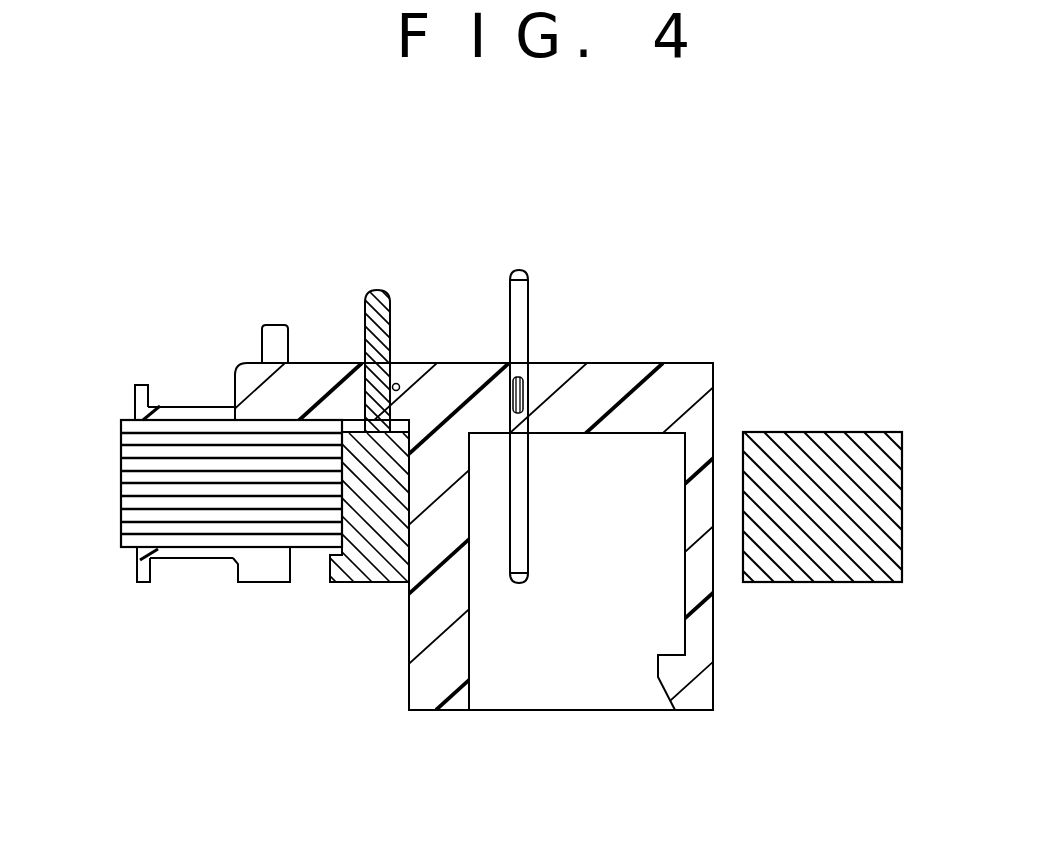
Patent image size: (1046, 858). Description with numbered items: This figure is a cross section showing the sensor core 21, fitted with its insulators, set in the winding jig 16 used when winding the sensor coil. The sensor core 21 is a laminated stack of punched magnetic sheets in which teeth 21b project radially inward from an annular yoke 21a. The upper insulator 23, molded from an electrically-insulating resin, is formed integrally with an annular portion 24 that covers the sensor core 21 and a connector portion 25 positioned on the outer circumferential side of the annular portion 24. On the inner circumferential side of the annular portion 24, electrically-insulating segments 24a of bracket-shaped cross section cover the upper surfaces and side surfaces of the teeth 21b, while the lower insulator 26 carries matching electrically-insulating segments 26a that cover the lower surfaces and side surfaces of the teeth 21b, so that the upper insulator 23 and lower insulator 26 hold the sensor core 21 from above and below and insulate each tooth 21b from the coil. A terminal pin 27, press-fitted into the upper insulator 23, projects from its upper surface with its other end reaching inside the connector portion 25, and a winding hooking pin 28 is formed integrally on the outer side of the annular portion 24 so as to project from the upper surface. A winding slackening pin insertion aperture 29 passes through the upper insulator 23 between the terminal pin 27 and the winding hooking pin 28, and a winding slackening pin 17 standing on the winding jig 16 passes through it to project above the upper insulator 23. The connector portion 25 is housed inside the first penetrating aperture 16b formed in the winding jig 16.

The winding jig 16 is at (853, 431).
The first penetrating aperture 16b is at (735, 458).
The winding slackening pin 17 is at (377, 292).
The sensor core 21 is at (118, 525).
The annular yoke 21a is at (303, 493).
The tooth 21b is at (150, 477).
The upper insulator 23 is at (713, 362).
The annular portion 24 is at (295, 395).
The electrically-insulating segment 24a is at (173, 410).
The connector portion 25 is at (673, 363).
The lower insulator 26 is at (267, 573).
The electrically-insulating segment 26a is at (162, 557).
The terminal pin 27 is at (527, 272).
The winding hooking pin 28 is at (275, 325).
The winding slackening pin insertion aperture 29 is at (400, 385).